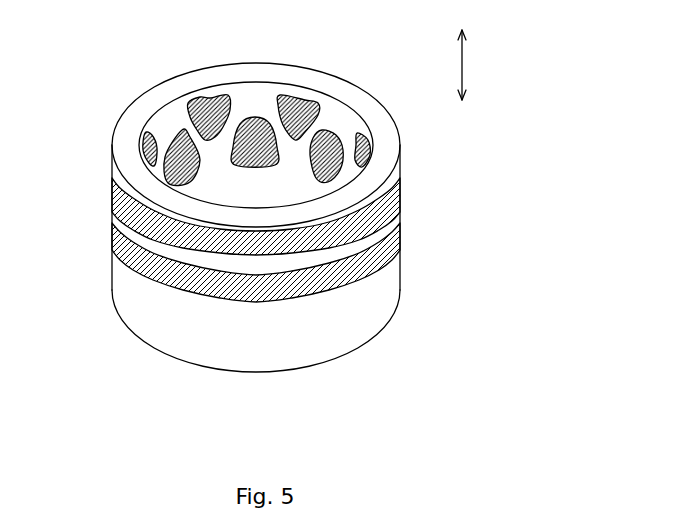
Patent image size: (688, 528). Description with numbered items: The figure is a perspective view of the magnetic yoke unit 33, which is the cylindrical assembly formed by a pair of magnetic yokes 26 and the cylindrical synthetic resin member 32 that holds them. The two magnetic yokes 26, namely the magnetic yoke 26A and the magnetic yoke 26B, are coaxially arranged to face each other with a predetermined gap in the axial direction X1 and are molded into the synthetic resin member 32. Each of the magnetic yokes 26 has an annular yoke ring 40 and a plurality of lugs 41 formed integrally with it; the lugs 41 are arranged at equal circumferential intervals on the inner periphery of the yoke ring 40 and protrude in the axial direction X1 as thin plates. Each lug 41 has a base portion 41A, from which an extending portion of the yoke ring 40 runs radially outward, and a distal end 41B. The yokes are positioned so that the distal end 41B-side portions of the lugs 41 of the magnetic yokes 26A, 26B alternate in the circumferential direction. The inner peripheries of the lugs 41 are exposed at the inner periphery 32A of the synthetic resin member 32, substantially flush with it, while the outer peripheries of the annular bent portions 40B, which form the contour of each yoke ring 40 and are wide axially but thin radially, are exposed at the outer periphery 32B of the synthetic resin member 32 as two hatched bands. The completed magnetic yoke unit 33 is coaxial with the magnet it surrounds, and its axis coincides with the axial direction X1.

The magnetic yoke unit 33 is at (100, 350).
The synthetic resin member 32 is at (401, 268).
The inner periphery of the synthetic resin member 32A is at (342, 128).
The outer periphery of the synthetic resin member 32B is at (310, 350).
The magnetic yokes 26 is at (317, 236).
The magnetic yoke 26A is at (401, 171).
The magnetic yoke 26B is at (401, 217).
The lugs 41 is at (212, 103).
The base portion of the lug 41A is at (190, 103).
The distal end of the lug 41B is at (182, 131).
The yoke ring 40 is at (67, 206).
The bent portion 40B is at (110, 181).
The axial direction X1 is at (463, 60).